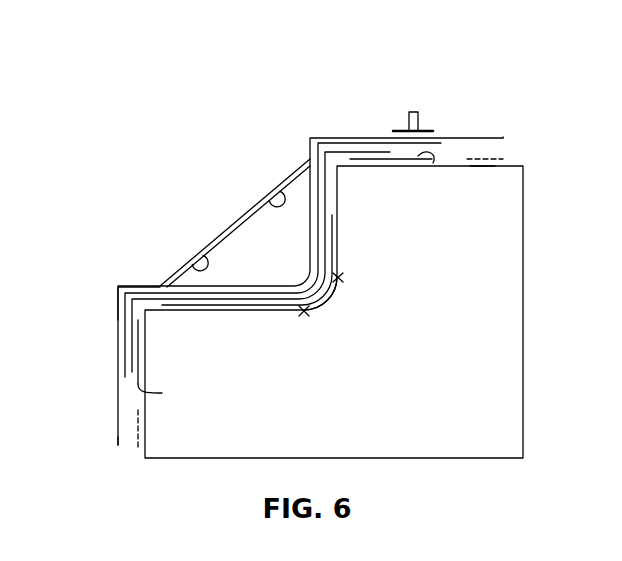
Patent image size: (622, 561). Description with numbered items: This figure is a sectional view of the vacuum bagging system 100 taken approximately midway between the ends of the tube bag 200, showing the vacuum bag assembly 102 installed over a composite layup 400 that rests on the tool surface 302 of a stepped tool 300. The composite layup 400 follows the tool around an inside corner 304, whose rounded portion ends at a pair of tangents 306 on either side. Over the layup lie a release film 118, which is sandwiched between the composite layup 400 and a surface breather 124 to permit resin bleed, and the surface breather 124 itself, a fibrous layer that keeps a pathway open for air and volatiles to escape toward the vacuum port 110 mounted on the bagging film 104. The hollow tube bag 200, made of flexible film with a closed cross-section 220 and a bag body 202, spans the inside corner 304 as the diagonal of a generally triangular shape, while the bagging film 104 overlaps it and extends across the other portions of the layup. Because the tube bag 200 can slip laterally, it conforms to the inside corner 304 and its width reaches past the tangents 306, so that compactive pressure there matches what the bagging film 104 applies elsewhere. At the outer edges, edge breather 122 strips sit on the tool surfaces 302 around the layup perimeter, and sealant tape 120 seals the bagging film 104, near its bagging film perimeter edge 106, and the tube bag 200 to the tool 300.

The vacuum bagging system 100 is at (179, 86).
The vacuum bag assembly 102 is at (115, 284).
The bagging film 104 is at (477, 138).
The bagging film perimeter edge 106 is at (503, 138).
The vacuum port 110 is at (408, 112).
The release film 118 is at (340, 152).
The sealant tape 120 is at (505, 157).
The edge breather 122 is at (433, 163).
The surface breather 124 is at (443, 143).
The tube bag 200 is at (236, 230).
The bag body 202 is at (192, 263).
The closed cross-section 220 is at (278, 196).
The tool 300 is at (528, 346).
The tool surface 302 is at (480, 167).
The inside corner 304 is at (330, 297).
The tangent 306 is at (340, 277).
The composite layup 400 is at (190, 307).